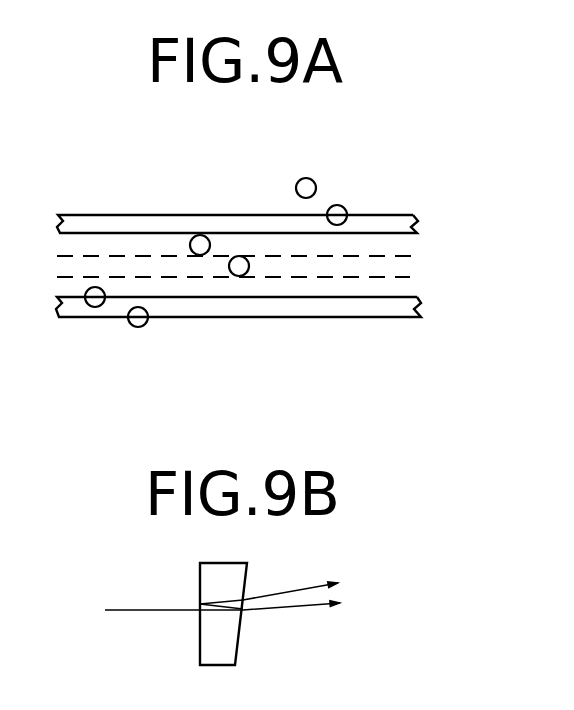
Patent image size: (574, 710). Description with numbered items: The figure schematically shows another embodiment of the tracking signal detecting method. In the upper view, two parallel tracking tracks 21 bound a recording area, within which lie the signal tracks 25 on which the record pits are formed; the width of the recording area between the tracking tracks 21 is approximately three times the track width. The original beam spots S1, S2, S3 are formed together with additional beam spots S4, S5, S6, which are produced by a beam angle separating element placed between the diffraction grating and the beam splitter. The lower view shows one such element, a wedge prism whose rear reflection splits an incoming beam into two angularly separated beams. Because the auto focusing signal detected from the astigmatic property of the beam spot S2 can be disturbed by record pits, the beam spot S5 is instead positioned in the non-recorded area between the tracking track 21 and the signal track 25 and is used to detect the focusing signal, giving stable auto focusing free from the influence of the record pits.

The tracking track 21 is at (418, 222).
The signal track 25 is at (413, 267).
The beam spot S1 is at (345, 208).
The beam spot S2 is at (240, 276).
The beam spot S3 is at (145, 325).
The additional beam spot S4 is at (309, 178).
The additional beam spot S5 is at (203, 235).
The additional beam spot S6 is at (96, 307).